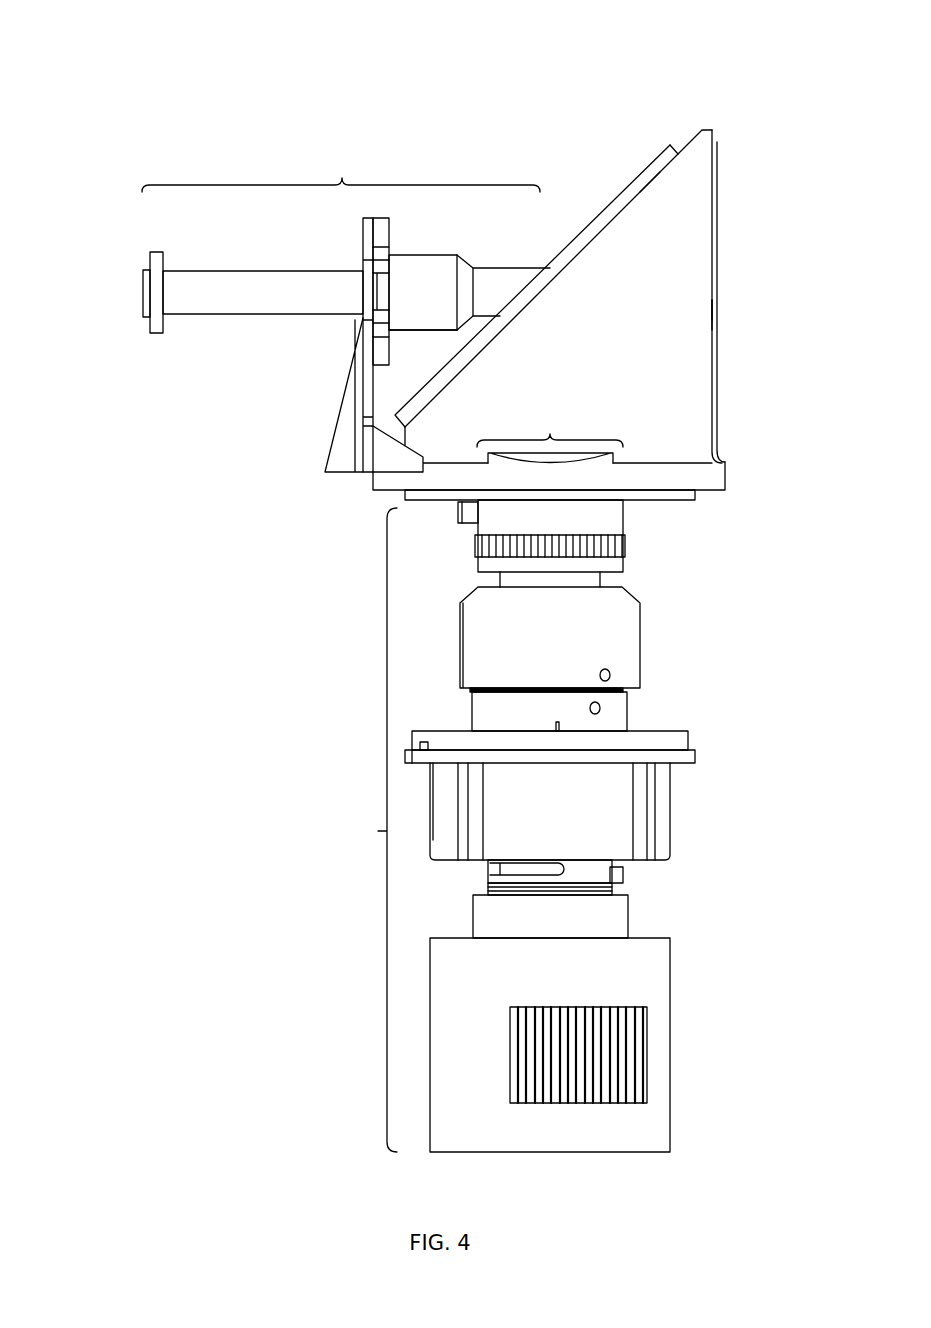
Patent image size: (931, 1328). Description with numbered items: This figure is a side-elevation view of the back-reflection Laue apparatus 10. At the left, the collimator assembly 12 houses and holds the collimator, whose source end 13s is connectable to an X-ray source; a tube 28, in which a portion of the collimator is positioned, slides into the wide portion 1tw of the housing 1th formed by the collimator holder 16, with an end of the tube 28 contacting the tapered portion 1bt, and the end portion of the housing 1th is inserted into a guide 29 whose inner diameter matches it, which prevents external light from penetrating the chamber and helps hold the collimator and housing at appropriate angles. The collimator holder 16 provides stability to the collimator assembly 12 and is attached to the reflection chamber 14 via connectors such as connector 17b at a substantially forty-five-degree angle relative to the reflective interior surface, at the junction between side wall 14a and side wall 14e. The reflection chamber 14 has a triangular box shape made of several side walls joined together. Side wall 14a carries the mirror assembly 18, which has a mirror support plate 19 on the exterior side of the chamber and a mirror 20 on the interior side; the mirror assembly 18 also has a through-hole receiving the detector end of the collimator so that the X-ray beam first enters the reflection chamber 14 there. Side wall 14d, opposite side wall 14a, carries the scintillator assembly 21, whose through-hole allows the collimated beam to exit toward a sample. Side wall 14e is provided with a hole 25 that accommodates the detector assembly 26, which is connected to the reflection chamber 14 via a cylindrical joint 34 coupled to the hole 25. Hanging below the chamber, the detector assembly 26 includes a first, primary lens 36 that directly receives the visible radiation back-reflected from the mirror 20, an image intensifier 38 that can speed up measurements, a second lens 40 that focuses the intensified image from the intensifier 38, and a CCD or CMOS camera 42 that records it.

The back-reflection Laue apparatus 10 is at (600, 68).
The collimator assembly 12 is at (341, 171).
The source end 13s is at (143, 290).
The reflection chamber 14 is at (573, 118).
The side wall 14a is at (620, 208).
The side wall 14d is at (718, 378).
The side wall 14e is at (670, 463).
The collimator holder 16 is at (313, 445).
The connector 17b is at (367, 478).
The mirror assembly 18 is at (644, 150).
The mirror support plate 19 is at (669, 143).
The mirror 20 is at (660, 178).
The scintillator assembly 21 is at (735, 310).
The hole 25 is at (550, 435).
The detector assembly 26 is at (369, 830).
The tube 28 is at (259, 290).
The guide 29 is at (512, 280).
The housing 1th is at (415, 272).
The tapered portion 1bt is at (470, 262).
The wide portion 1tw is at (427, 331).
The cylindrical joint 34 is at (712, 478).
The first lens 36 is at (610, 522).
The image intensifier 38 is at (601, 644).
The second lens 40 is at (610, 812).
The CCD or CMOS camera 42 is at (642, 965).